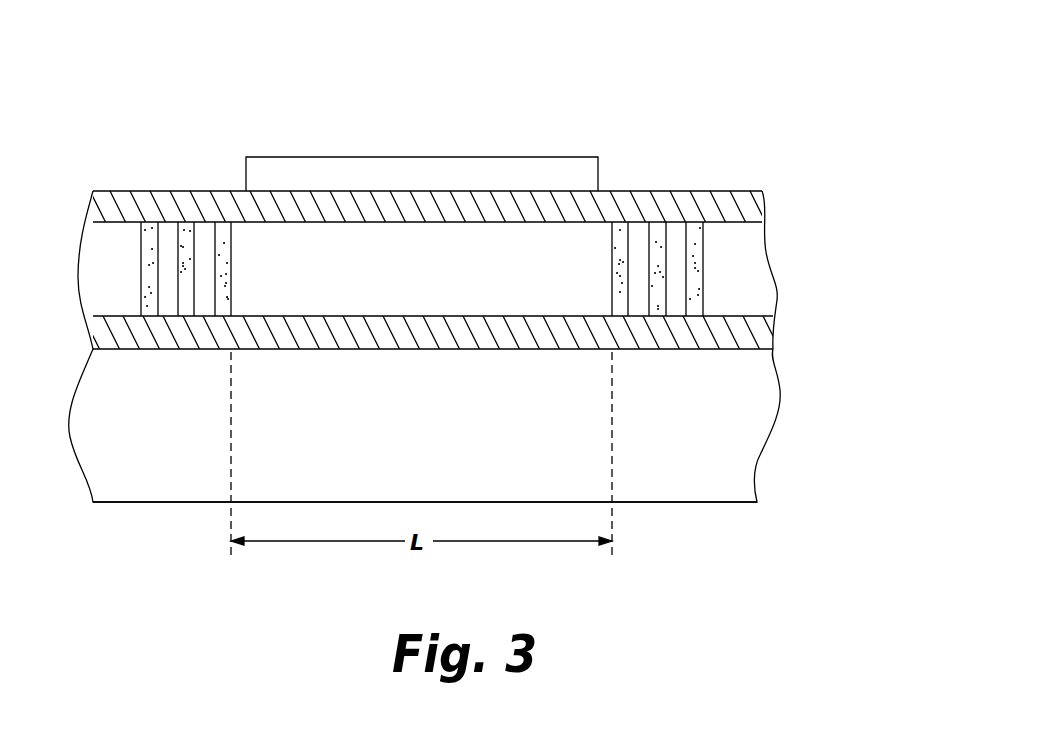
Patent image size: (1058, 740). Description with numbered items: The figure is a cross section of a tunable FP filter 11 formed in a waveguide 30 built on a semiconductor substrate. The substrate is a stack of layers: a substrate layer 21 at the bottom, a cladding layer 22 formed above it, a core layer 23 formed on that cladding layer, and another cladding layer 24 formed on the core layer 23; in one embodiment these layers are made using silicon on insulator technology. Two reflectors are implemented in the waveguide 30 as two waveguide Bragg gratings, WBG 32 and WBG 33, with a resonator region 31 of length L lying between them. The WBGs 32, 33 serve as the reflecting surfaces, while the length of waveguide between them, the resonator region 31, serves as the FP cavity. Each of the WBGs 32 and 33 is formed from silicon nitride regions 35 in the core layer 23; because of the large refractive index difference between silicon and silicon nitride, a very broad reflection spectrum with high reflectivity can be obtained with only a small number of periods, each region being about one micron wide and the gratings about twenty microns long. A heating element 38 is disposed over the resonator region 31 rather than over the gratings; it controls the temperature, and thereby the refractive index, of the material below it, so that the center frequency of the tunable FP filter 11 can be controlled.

The tunable FP filter 11 is at (680, 79).
The substrate layer 21 is at (770, 430).
The cladding layer 22 is at (775, 349).
The core layer 23 is at (778, 294).
The cladding layer 24 is at (763, 200).
The waveguide 30 is at (833, 192).
The resonator region 31 is at (432, 284).
The WBG 32 is at (190, 180).
The WBG 33 is at (675, 178).
The silicon nitride regions 35 is at (215, 302).
The heating element 38 is at (549, 157).